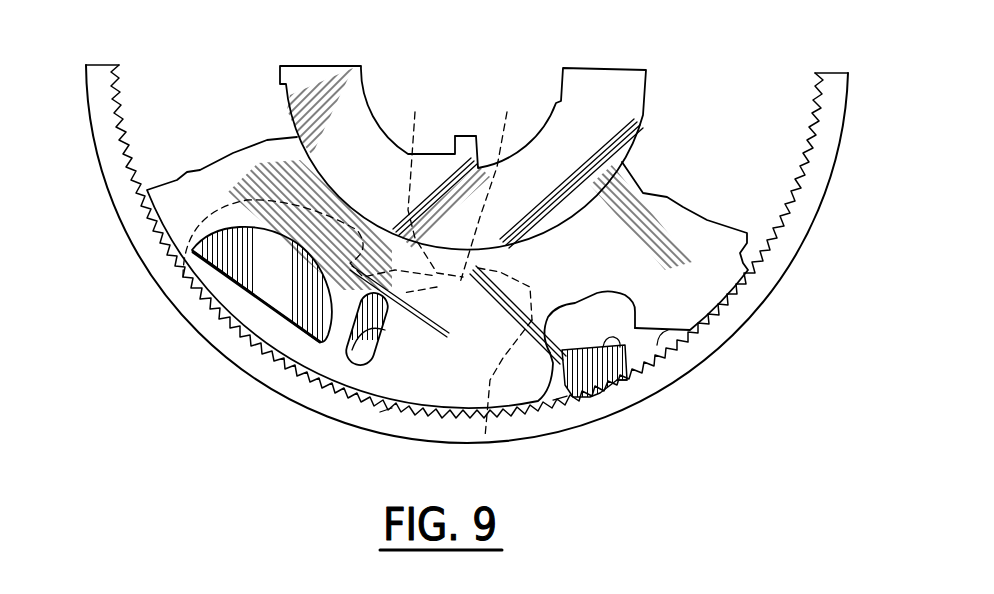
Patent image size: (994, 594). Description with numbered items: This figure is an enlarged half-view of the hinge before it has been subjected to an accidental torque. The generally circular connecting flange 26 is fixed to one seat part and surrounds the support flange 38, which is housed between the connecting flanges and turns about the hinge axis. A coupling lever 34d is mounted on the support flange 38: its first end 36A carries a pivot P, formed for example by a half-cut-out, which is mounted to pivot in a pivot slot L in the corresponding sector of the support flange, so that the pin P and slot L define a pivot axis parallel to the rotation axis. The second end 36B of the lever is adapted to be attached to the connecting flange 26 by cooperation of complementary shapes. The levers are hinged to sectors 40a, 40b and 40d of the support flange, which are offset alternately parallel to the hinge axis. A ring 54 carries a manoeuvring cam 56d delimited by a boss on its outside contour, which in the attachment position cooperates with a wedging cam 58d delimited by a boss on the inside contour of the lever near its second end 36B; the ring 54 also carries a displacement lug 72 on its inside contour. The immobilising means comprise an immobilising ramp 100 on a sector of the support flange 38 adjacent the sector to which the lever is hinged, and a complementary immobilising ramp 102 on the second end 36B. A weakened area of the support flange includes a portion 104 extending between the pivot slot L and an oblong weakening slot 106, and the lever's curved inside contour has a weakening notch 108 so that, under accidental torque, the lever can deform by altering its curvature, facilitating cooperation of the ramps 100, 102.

The connecting flange 26 is at (828, 222).
The ring 54 is at (613, 117).
The displacement lug 72 is at (466, 133).
The manoeuvring cam 56d is at (425, 189).
The wedging cam 58d is at (496, 203).
The support flange 38 is at (693, 297).
The sector of the support-flange 40a is at (722, 268).
The sector of the support-flange 40b is at (170, 218).
The first end of the coupling lever 36A is at (152, 225).
The pivot slot L is at (195, 257).
The pivot P is at (258, 268).
The portion of the support-flange 104 is at (345, 362).
The weakening slot 106 is at (362, 365).
The sector of the support-flange 40d is at (385, 410).
The notch 108 is at (485, 438).
The coupling lever 34d is at (560, 397).
The second end of the coupling lever 36B is at (583, 400).
The complementary immobilising ramp 102 is at (622, 382).
The immobilising ramp 100 is at (657, 345).